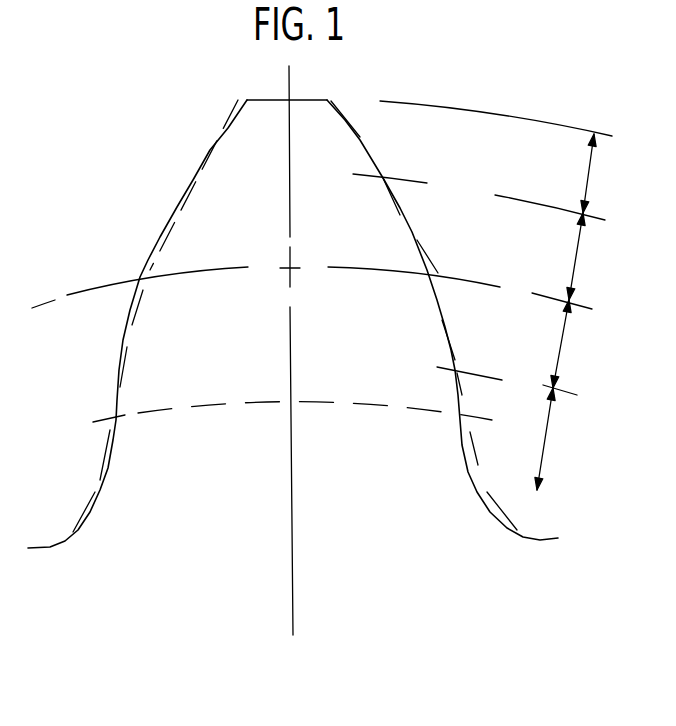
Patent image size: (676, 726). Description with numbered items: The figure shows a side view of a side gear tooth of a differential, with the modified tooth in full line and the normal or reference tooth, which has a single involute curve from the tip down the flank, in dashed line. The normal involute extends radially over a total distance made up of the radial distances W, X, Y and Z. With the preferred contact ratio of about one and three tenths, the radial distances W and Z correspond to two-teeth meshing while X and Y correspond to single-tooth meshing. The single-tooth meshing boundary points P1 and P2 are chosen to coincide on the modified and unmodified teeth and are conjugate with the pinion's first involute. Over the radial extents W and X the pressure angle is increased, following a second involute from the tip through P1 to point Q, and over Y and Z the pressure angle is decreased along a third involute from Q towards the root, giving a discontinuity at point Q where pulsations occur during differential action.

The single-tooth meshing boundary point P1 is at (479, 187).
The single-tooth meshing boundary point P2 is at (486, 374).
The discontinuity point Q is at (266, 278).
The radial distance W is at (599, 173).
The radial distance X is at (584, 256).
The radial distance Y is at (570, 344).
The radial distance Z is at (554, 439).